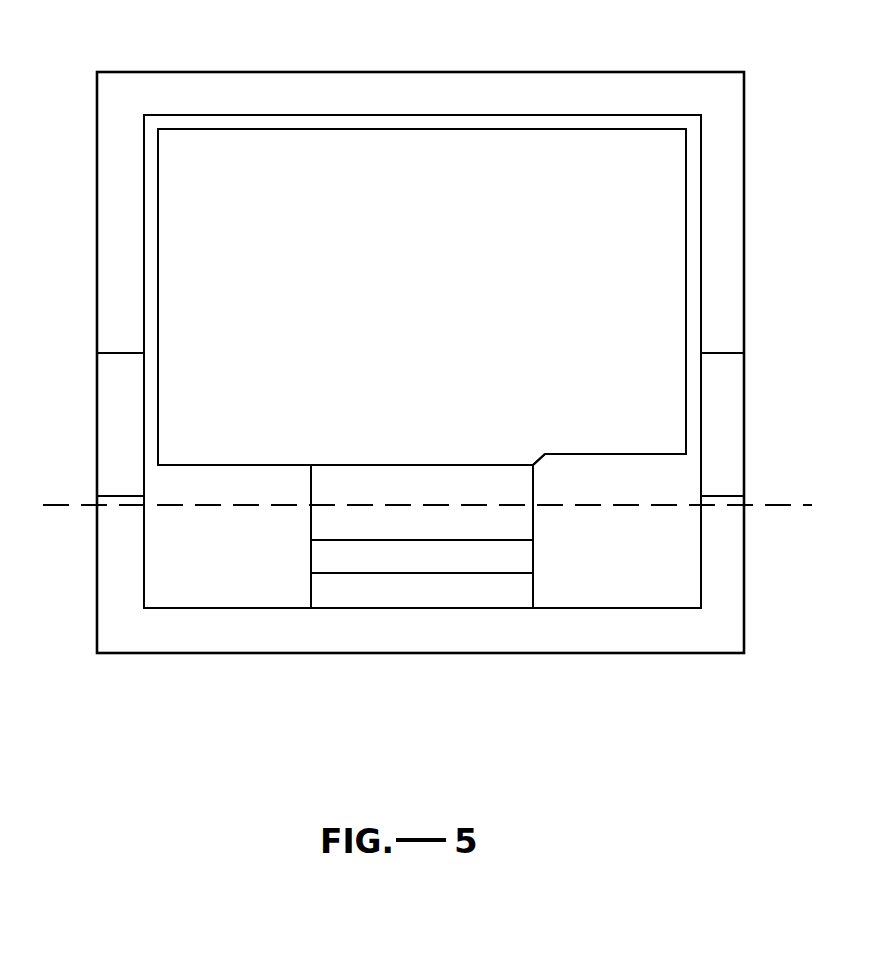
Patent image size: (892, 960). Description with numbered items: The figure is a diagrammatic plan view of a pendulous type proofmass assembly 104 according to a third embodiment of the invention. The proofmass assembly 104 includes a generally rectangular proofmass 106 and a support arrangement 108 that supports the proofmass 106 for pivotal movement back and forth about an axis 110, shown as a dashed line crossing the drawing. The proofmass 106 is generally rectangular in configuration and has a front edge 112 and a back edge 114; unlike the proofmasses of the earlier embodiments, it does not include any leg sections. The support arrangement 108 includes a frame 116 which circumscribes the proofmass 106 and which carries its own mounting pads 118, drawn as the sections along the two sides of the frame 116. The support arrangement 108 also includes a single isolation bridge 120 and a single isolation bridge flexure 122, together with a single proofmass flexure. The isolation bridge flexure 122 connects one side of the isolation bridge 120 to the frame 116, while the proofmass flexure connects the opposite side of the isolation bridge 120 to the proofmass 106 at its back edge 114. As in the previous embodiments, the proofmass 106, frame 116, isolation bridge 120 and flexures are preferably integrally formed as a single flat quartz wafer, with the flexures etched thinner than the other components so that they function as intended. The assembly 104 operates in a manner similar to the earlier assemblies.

The proofmass assembly 104 is at (778, 92).
The proofmass 106 is at (305, 430).
The support arrangement 108 is at (303, 550).
The axis 110 is at (800, 507).
The front edge 112 is at (300, 130).
The back edge 114 is at (195, 466).
The frame 116 is at (625, 640).
The mounting pads 118 is at (112, 400).
The isolation bridge 120 is at (487, 558).
The isolation bridge flexure 122 is at (335, 595).